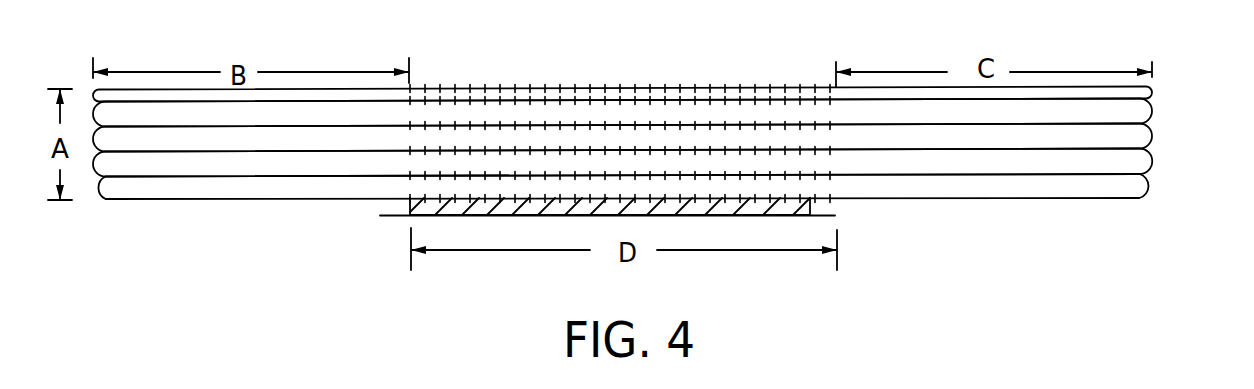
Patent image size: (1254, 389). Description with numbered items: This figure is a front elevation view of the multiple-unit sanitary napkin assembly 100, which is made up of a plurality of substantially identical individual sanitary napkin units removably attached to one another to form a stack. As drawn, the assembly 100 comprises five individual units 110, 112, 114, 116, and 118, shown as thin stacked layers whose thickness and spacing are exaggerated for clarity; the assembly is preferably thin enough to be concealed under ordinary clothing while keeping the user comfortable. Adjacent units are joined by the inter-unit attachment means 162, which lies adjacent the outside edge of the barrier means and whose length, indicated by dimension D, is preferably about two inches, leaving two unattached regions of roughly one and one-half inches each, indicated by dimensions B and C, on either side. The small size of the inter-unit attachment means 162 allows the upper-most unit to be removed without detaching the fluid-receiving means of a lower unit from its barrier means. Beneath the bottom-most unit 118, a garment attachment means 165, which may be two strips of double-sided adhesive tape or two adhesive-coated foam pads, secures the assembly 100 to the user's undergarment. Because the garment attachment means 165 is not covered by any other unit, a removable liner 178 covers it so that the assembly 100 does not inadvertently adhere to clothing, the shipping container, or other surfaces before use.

The multiple-unit sanitary napkin assembly 100 is at (536, 75).
The individual unit 110 is at (1152, 89).
The individual unit 112 is at (1152, 111).
The individual unit 114 is at (1152, 136).
The individual unit 116 is at (1152, 161).
The individual unit 118 is at (1152, 186).
The inter-unit attachment means 162 is at (683, 85).
The garment attachment means 165 is at (408, 206).
The removable liners 178 is at (388, 218).